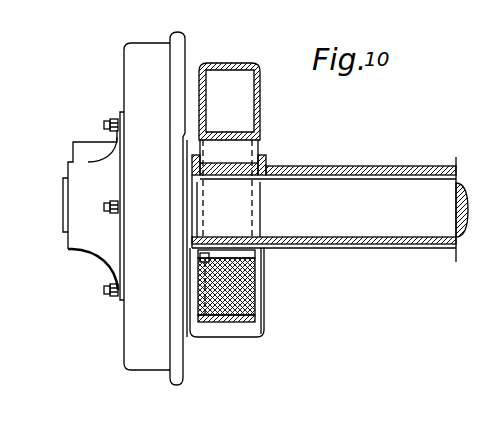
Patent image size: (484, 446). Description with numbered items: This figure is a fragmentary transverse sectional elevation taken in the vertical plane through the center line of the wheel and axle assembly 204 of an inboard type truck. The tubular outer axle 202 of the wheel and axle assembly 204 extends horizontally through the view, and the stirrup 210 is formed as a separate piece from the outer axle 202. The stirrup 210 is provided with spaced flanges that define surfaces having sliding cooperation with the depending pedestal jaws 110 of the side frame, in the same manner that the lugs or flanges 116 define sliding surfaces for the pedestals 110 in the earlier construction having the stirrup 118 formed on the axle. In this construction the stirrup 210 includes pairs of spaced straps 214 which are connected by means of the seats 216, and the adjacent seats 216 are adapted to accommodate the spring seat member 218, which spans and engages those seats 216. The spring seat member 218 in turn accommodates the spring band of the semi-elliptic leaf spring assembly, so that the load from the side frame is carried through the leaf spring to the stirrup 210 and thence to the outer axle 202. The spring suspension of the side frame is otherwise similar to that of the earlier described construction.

The pedestal jaws 110 is at (262, 122).
The tubular axle 202 is at (357, 167).
The wheel and axle assembly 204 is at (130, 345).
The stirrup 118 is at (208, 260).
The lugs or flanges 116 is at (213, 293).
The stirrup 210 is at (265, 262).
The spaced straps 214 is at (266, 284).
The seats 216 is at (247, 331).
The spring seat member 218 is at (225, 318).